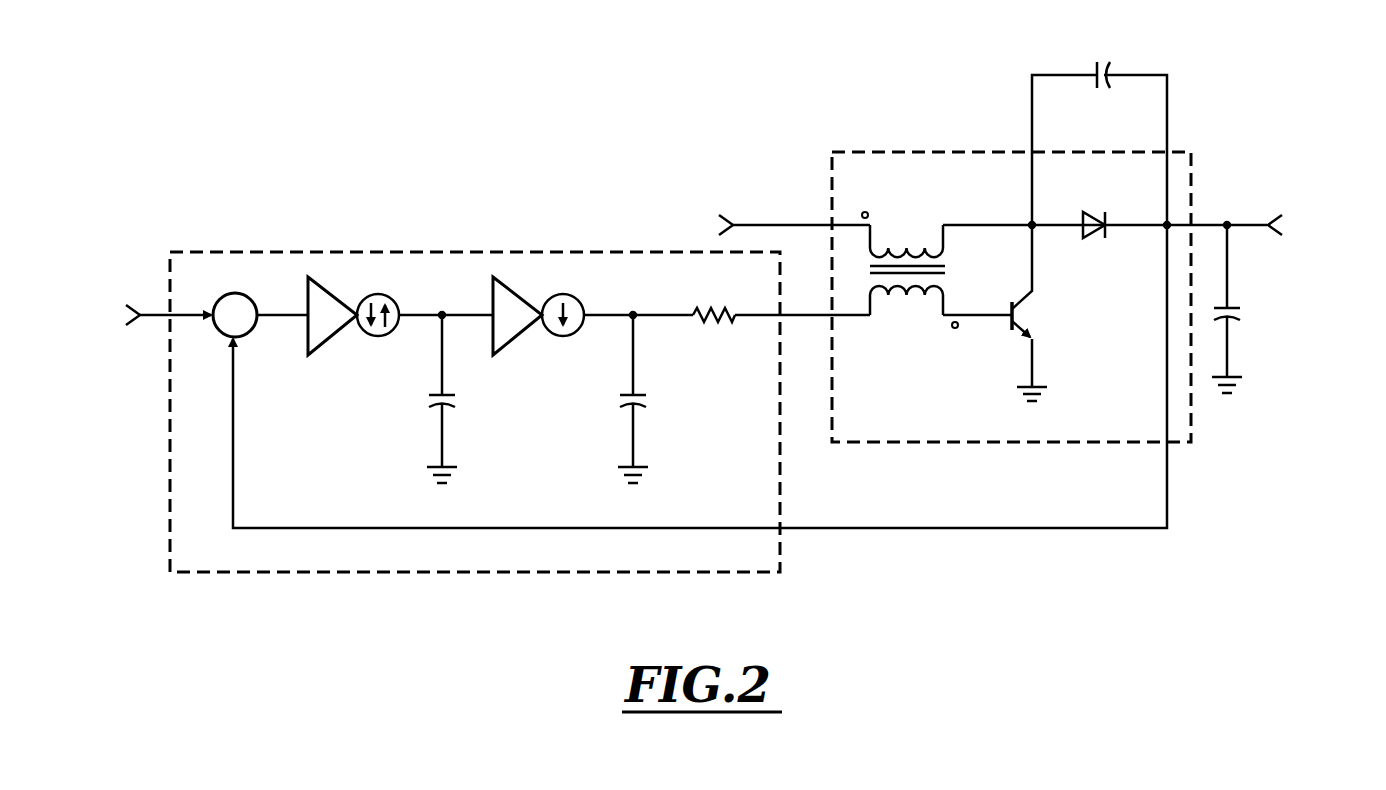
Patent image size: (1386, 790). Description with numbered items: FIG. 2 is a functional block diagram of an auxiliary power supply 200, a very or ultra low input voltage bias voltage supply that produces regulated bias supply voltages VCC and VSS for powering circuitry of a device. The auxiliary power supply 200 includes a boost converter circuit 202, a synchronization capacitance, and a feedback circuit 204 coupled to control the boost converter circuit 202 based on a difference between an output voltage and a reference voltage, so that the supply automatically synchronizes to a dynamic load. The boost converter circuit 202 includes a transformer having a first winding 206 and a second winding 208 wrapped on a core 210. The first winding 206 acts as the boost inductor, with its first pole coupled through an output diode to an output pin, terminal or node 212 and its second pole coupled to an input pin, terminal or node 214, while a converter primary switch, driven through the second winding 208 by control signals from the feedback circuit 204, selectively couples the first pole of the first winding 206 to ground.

The auxiliary power supply 200 is at (243, 112).
The boost converter circuit 202 is at (893, 150).
The feedback circuit 204 is at (277, 250).
The first winding 206 is at (911, 220).
The second winding 208 is at (908, 302).
The core 210 is at (946, 271).
The output pin, terminal or node 212 is at (1269, 222).
The input pin, terminal or node 214 is at (731, 222).